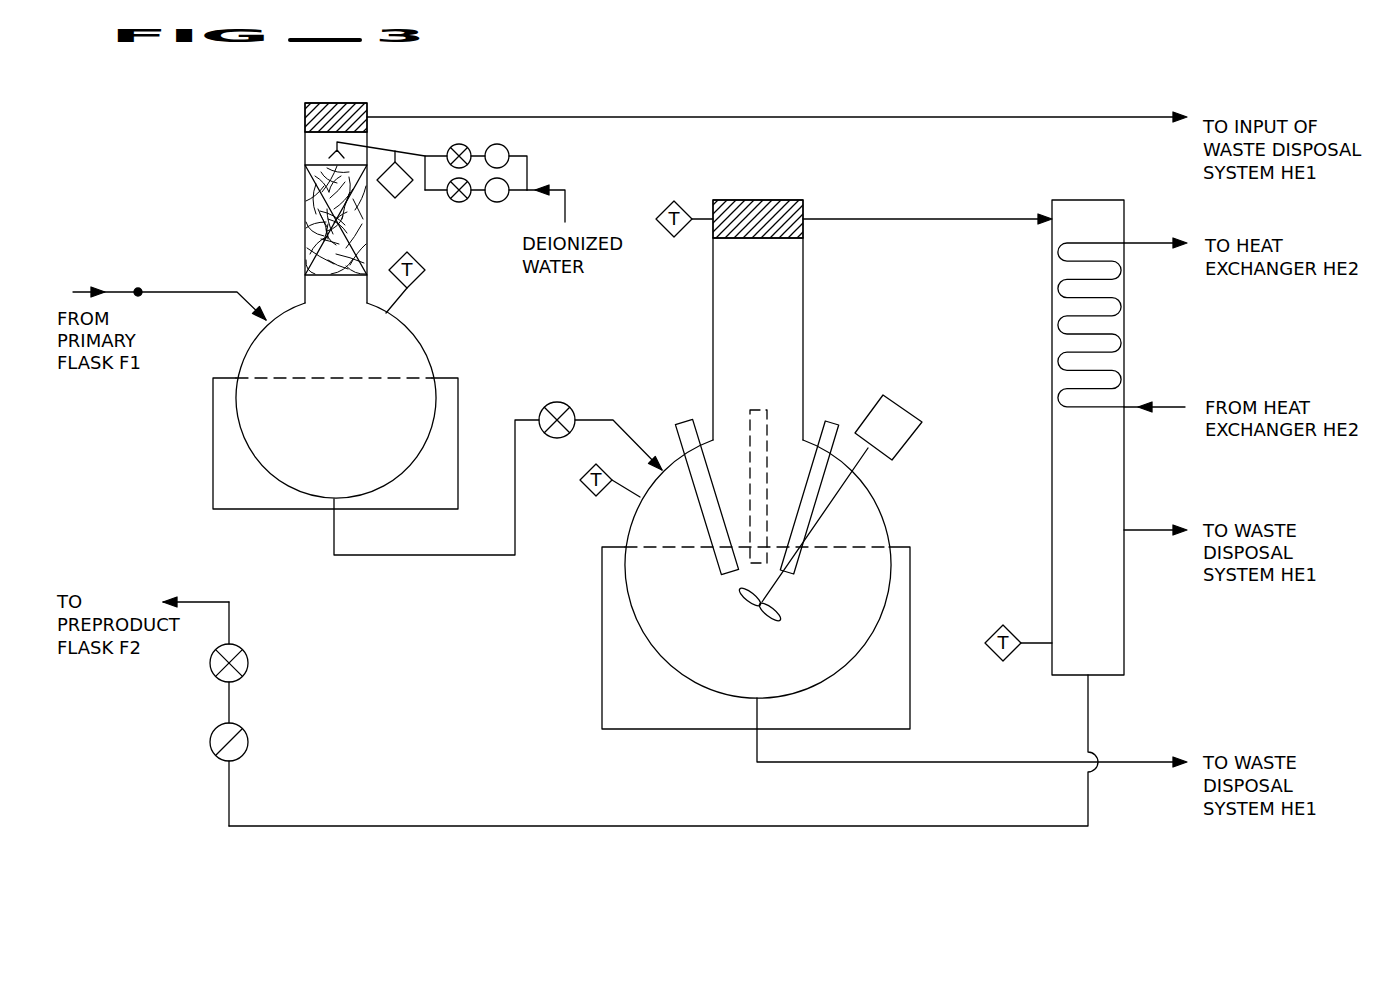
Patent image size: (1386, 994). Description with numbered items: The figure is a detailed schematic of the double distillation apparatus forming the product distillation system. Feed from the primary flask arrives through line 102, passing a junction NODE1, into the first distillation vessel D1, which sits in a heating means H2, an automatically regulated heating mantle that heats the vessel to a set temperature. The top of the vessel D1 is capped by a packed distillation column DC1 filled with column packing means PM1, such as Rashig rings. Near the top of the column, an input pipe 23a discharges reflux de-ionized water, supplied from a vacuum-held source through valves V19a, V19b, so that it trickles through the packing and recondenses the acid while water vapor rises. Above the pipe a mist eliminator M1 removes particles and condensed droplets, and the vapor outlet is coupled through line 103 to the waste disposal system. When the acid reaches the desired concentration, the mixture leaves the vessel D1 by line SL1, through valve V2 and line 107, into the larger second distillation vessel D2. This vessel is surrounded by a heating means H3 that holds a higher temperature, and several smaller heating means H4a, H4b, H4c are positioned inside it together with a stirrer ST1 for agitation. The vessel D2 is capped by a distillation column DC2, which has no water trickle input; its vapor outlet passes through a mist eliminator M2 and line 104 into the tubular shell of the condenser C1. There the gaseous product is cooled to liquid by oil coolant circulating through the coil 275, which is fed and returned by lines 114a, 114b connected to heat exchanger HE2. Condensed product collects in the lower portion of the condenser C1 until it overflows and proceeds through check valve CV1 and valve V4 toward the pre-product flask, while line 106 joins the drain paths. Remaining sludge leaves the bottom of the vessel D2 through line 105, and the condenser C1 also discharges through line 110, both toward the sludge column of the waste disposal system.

The mist eliminator M1 is at (336, 106).
The input pipe 23a is at (380, 146).
The line 103 is at (696, 114).
The valve V19a is at (476, 157).
The valve V19b is at (476, 203).
The column packing means PM1 is at (303, 218).
The distillation column DC1 is at (372, 214).
The node 1 NODE1 is at (139, 288).
The line 102 is at (190, 296).
The distillation vessel D1 is at (336, 400).
The heating means H2 is at (335, 443).
The line SL1 is at (413, 557).
The valve V4 is at (246, 662).
The check valve CV1 is at (252, 774).
The drain line 106 is at (592, 824).
The line 107 is at (592, 418).
The valve V2 is at (557, 434).
The heating means H4a is at (693, 484).
The heating means H4b is at (760, 471).
The heating means H4c is at (815, 483).
The stirrer ST1 is at (895, 454).
The distillation vessel D2 is at (758, 569).
The heating means H3 is at (756, 638).
The line 105 is at (881, 763).
The mist eliminator M2 is at (758, 209).
The line 104 is at (886, 218).
The distillation column DC2 is at (805, 331).
The condenser C1 is at (1037, 362).
The coil 275 is at (1109, 336).
The line 114a is at (1145, 246).
The line 114b is at (1128, 405).
The line 110 is at (1144, 532).